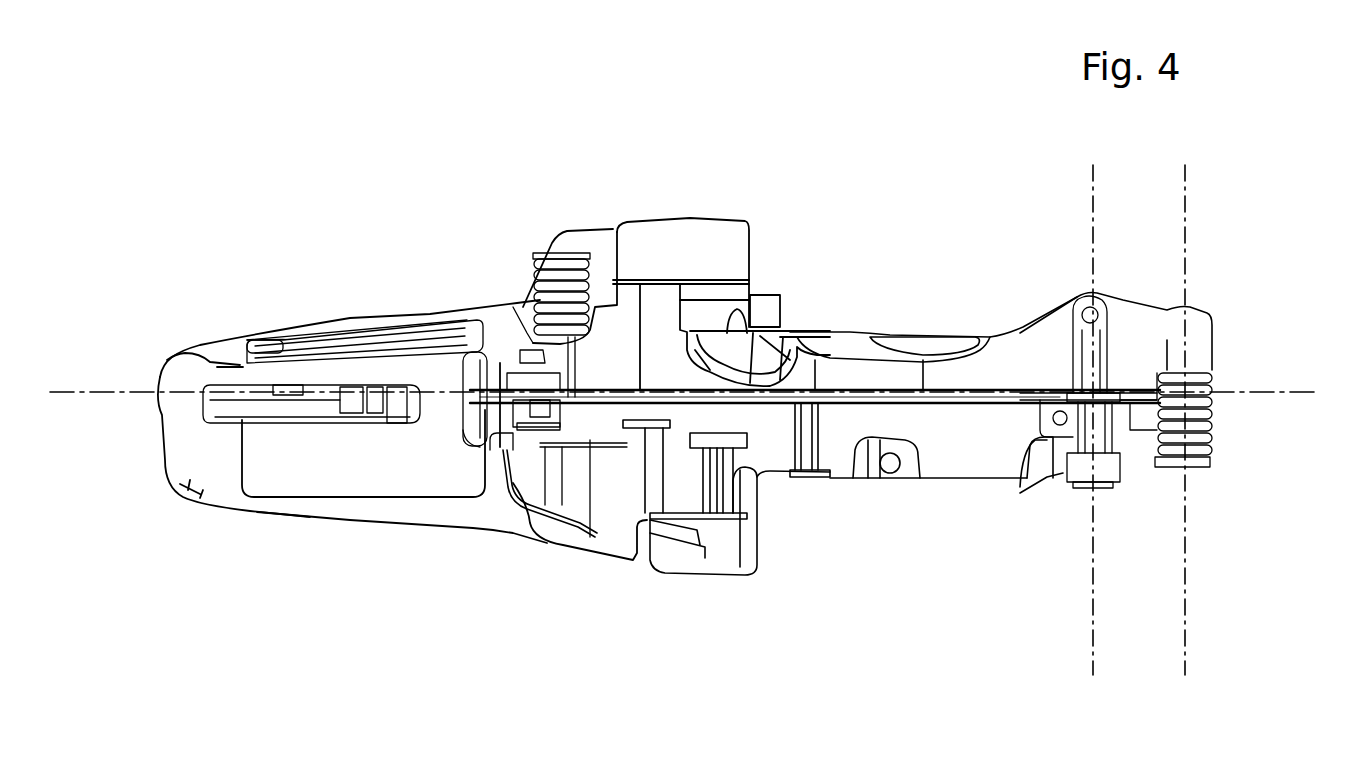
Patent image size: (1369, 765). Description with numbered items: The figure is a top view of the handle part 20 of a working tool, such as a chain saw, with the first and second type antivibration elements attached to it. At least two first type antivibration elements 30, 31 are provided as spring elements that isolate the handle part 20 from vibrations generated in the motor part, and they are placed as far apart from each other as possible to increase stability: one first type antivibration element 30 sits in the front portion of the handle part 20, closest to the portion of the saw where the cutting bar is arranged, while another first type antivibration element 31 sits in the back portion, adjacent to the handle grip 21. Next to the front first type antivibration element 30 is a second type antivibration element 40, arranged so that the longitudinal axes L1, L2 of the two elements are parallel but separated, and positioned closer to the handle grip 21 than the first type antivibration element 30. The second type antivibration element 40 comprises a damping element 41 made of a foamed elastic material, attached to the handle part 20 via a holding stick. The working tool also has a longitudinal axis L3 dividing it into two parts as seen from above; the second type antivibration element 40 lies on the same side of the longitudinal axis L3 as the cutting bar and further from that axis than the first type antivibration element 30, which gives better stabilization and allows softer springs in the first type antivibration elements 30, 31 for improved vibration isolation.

The handle part 20 is at (697, 137).
The handle grip 21 is at (337, 397).
The first type antivibration element 31 is at (537, 268).
The first type antivibration element 30 is at (1213, 437).
The second type antivibration element 40 is at (1118, 503).
The damping element 41 is at (1037, 487).
The longitudinal axis L1 is at (1088, 636).
The longitudinal axis L2 is at (1187, 627).
The longitudinal axis L3 is at (1277, 393).